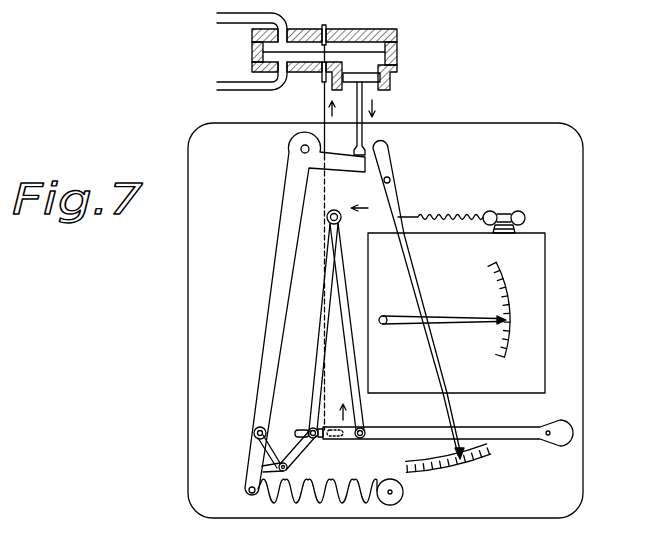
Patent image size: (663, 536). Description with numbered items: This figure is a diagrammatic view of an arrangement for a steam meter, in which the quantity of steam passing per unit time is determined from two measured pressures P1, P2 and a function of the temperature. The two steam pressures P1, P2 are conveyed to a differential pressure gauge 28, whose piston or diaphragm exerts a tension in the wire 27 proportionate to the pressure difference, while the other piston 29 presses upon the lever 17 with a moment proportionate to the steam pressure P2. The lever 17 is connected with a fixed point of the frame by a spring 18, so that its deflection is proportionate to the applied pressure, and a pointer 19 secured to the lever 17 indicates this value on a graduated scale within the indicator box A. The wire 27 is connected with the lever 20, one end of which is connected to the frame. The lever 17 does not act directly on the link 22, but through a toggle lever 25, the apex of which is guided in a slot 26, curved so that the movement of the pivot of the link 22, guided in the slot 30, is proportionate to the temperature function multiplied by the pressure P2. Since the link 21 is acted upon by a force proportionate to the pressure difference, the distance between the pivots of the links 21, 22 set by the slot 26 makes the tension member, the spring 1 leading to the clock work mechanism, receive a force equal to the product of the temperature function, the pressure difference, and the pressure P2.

The measured pressure P1 is at (236, 24).
The measured pressure P2 is at (236, 81).
The differential pressure gauge 28 is at (355, 30).
The wire 27 is at (322, 100).
The piston 29 is at (368, 82).
The lever 17 is at (278, 230).
The slot 30 is at (299, 430).
The toggle lever 25 is at (304, 452).
The slot 26 is at (297, 468).
The spring 18 is at (322, 498).
The link 22 is at (318, 364).
The link 21 is at (363, 405).
The lever 20 is at (514, 435).
The pointer 19 is at (412, 283).
The spring 1 is at (443, 216).
The indicator box A is at (523, 247).